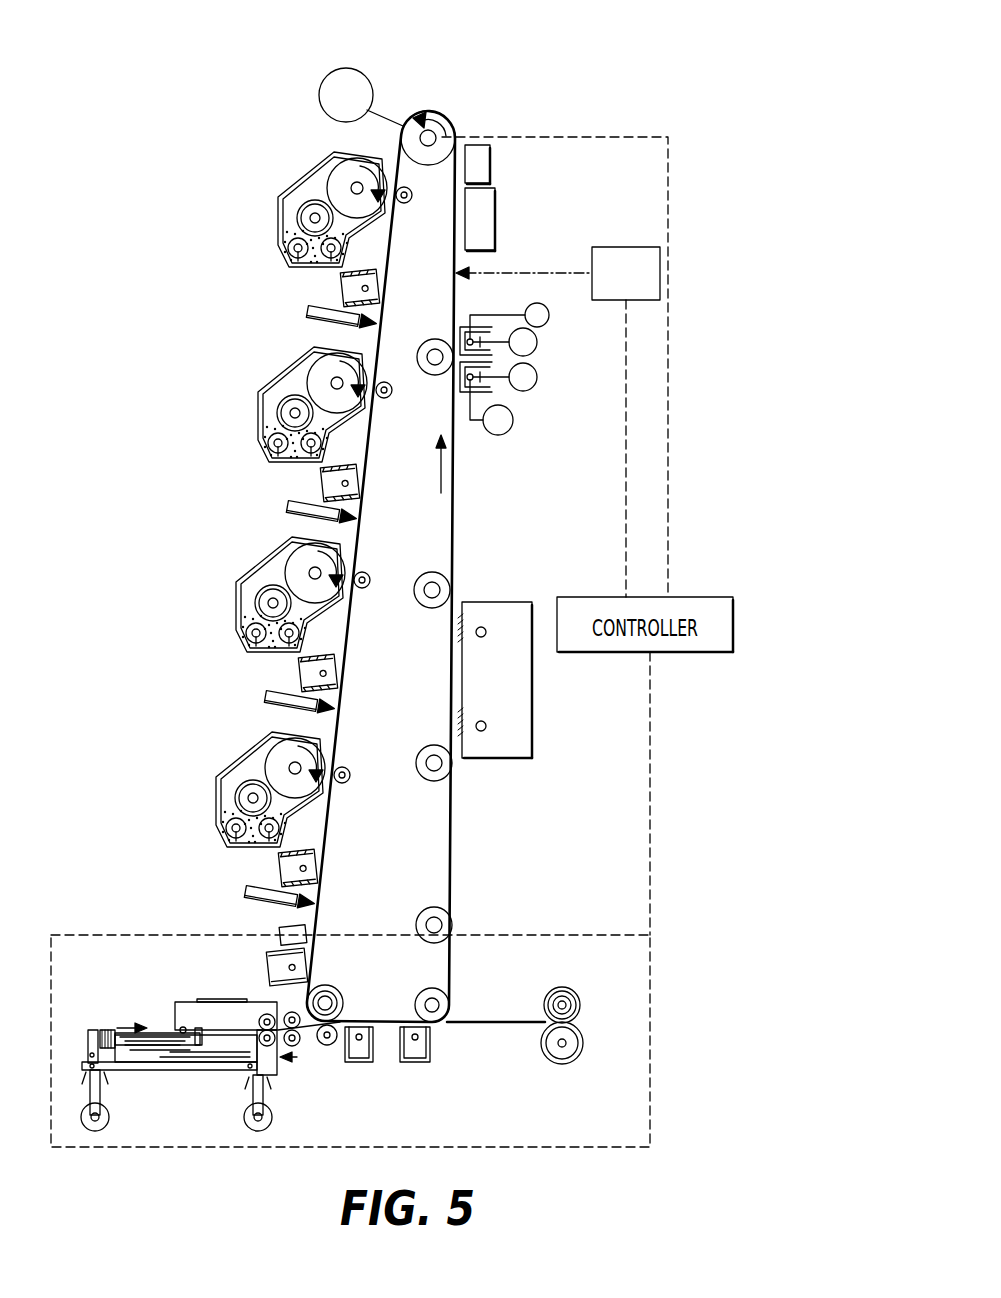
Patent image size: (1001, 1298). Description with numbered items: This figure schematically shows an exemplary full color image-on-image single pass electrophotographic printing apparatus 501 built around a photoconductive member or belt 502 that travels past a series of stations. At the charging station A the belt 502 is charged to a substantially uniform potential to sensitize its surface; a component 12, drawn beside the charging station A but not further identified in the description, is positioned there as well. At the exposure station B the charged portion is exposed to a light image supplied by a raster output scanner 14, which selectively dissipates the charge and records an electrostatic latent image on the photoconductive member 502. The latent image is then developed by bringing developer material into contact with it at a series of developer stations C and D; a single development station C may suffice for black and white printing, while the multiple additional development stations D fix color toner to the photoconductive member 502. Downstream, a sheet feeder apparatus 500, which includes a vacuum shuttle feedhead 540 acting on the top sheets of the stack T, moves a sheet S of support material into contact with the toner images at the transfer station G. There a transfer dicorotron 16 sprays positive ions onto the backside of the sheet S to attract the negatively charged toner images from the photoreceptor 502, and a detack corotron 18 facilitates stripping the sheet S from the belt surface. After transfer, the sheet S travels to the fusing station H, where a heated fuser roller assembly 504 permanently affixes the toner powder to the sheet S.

The printing apparatus 501 is at (250, 70).
The photoconductive member 502 is at (472, 495).
The sheet feeder apparatus 500 is at (350, 1041).
The vacuum shuttle feedhead 540 is at (188, 993).
The heated fuser roller assembly 504 is at (559, 977).
The raster output scanner 14 is at (625, 247).
The charging / sensor unit 12 is at (552, 348).
The transfer dicorotron 16 is at (354, 1066).
The detack corotron 18 is at (424, 1066).
The developer station C is at (263, 188).
The developer stations D is at (241, 384).
The charging station A is at (557, 373).
The exposure station B is at (502, 259).
The sheet S is at (155, 1033).
The stack T is at (148, 1056).
The transfer station G is at (388, 1086).
The fusing station H is at (593, 1012).